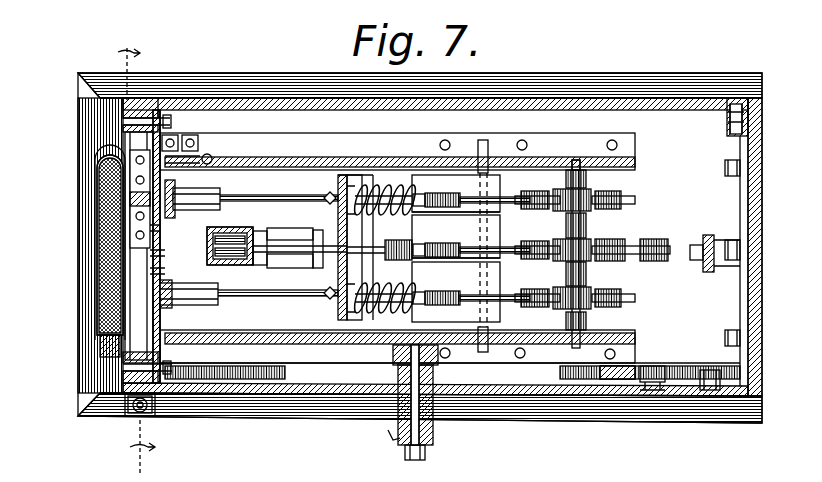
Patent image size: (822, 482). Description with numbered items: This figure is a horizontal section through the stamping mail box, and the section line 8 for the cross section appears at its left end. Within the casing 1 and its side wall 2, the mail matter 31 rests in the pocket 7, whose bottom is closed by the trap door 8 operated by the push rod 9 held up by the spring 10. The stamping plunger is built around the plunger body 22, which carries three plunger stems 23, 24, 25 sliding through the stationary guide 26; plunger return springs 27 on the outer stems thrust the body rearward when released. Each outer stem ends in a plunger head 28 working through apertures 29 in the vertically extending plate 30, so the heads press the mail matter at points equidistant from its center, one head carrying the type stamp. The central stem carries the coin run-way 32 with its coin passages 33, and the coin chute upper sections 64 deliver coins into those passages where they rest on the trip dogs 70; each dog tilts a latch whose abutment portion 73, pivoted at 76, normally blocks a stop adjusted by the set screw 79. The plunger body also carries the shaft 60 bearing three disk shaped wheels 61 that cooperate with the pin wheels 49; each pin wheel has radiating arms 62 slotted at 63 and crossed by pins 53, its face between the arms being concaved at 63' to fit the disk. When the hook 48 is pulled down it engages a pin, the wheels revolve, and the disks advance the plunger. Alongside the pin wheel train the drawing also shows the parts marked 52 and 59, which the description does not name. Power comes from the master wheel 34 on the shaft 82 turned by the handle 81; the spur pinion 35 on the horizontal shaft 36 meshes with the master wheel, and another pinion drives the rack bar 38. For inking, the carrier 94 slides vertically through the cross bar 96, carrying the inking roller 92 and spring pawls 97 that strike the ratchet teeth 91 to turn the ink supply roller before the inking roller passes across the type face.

The casing 1 is at (470, 99).
The casing side wall 2 is at (760, 184).
The pocket 7 is at (98, 312).
The trap door 8 is at (136, 250).
The push rod 9 is at (150, 416).
The spring 10 is at (132, 415).
The plunger body 22 is at (456, 248).
The plunger stem 23 is at (322, 192).
The plunger stem 24 is at (265, 298).
The plunger stem 25 is at (393, 260).
The stationary guide 26 is at (220, 180).
The plunger return springs 27 is at (386, 186).
The plunger head 28 is at (178, 306).
The apertures 29 is at (150, 300).
The vertically extending plate 30 is at (160, 330).
The mail matter 31 is at (100, 178).
The coin run-way 32 is at (240, 230).
The coin passages 33 is at (238, 262).
The master wheel 34 is at (560, 382).
The spur pinion 35 is at (715, 388).
The horizontal shaft 36 is at (672, 386).
The rack bar 38 is at (714, 243).
The hook 48 is at (710, 262).
The pin wheels 49 is at (572, 249).
The large gear 52 is at (634, 248).
The pins 53 is at (622, 202).
The stop piece 59 is at (694, 250).
The shaft 60 is at (484, 160).
The disk shaped wheels 61 is at (446, 298).
The radiating arms 62 is at (560, 188).
The slot 63 is at (629, 239).
The concaved periphery 63' is at (613, 309).
The coin chute upper sections 64 is at (178, 188).
The trip dogs 70 is at (300, 268).
The abutment portion 73 is at (340, 197).
The latch pivot 76 is at (341, 175).
The set screw 79 is at (350, 300).
The handle 81 is at (398, 430).
The shaft 82 is at (432, 428).
The ratchet teeth 91 is at (150, 271).
The inking roller 92 is at (150, 228).
The carrier 94 is at (133, 214).
The cross bar 96 is at (130, 197).
The spring pawls 97 is at (150, 253).